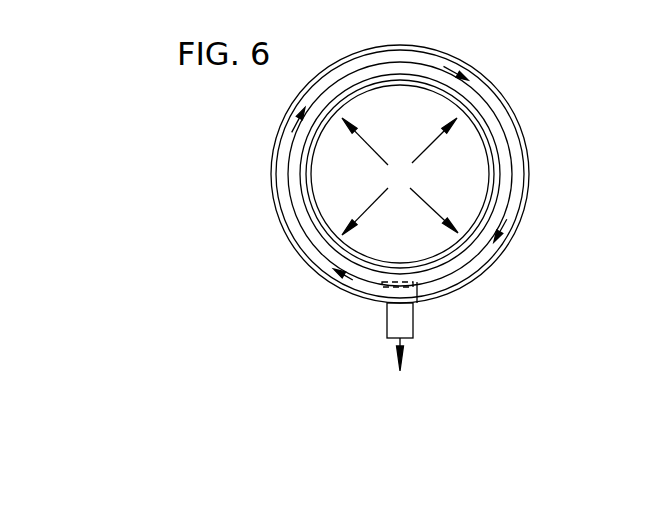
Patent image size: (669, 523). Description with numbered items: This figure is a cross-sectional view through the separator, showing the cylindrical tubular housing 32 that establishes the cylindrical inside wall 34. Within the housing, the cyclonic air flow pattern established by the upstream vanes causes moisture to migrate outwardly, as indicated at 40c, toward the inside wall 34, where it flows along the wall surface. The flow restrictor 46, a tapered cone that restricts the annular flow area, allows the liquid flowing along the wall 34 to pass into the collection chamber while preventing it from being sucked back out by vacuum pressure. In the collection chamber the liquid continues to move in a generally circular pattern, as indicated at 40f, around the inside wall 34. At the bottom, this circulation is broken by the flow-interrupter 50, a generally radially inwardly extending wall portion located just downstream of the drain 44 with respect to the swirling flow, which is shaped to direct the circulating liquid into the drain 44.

The housing 32 is at (460, 62).
The inside wall 34 is at (279, 208).
The flow restrictor 46 is at (297, 137).
The circular liquid flow pattern 40f is at (497, 112).
The outward moisture migration 40c is at (430, 153).
The flow-interrupter 50 is at (417, 292).
The drain 44 is at (387, 332).